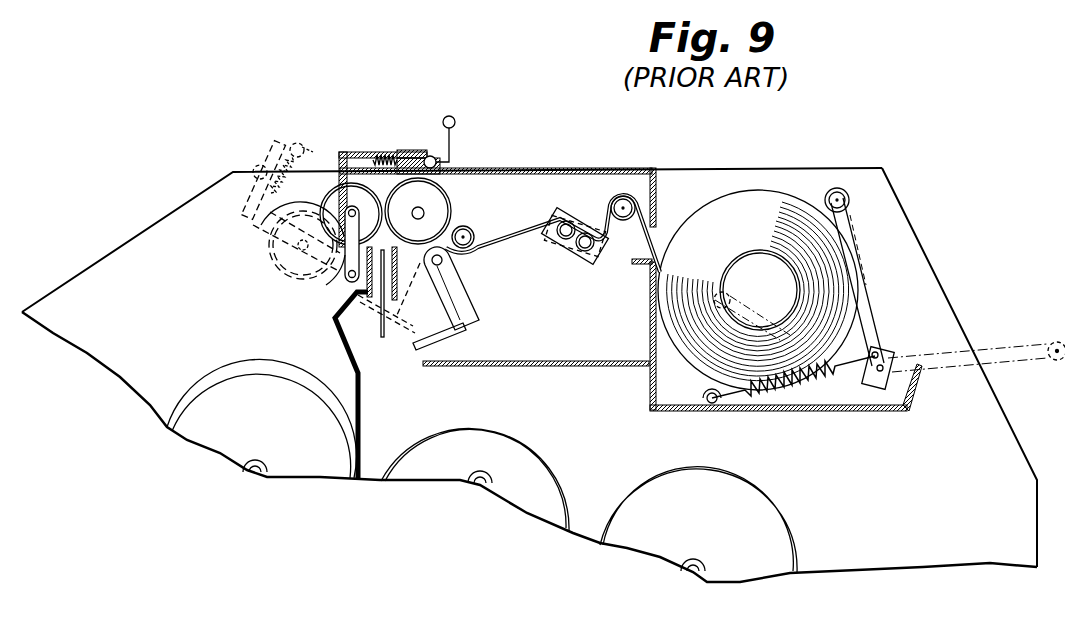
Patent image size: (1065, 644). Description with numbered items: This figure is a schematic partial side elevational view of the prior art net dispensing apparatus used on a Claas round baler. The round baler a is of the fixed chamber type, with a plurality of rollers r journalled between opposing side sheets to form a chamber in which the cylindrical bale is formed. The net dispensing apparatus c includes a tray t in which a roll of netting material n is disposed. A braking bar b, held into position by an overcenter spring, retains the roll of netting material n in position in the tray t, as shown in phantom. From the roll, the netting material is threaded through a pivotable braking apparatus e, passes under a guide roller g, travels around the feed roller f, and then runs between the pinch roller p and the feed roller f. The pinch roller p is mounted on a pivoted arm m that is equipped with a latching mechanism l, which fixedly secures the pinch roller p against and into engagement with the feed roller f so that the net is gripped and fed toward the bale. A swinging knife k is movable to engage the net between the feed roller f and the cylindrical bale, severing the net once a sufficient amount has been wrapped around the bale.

The round baler a is at (915, 102).
The braking bar b is at (842, 186).
The net dispensing apparatus c is at (925, 235).
The pivotable braking apparatus e is at (575, 220).
The feed roller f is at (433, 200).
The guide roller g is at (472, 228).
The swinging knife k is at (458, 300).
The latching mechanism l is at (412, 152).
The pivoted arm m is at (338, 275).
The roll of netting material n is at (728, 200).
The pinch roller p is at (258, 227).
The rollers r is at (202, 387).
The tray t is at (800, 410).